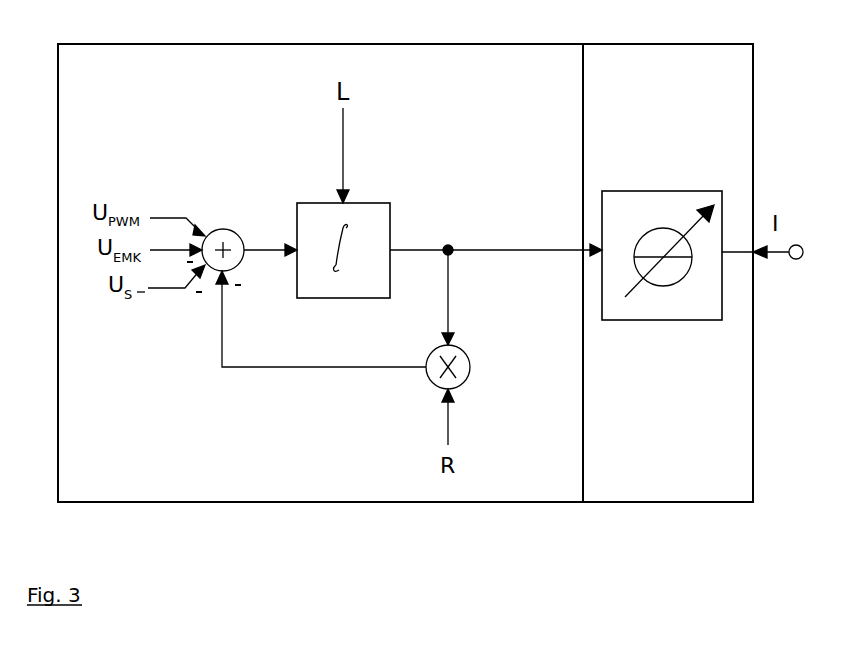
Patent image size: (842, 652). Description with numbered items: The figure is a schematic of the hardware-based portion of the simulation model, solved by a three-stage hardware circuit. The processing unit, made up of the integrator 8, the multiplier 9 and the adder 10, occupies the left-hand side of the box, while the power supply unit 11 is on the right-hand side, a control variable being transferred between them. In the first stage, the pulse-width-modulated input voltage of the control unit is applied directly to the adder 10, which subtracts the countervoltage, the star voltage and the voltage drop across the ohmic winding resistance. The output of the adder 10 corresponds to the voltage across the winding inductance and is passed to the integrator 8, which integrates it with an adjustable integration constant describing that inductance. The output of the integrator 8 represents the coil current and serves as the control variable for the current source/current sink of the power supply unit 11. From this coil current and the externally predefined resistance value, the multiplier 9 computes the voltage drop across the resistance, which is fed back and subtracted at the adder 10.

The integrator 8 is at (375, 210).
The multiplier 9 is at (470, 362).
The adder 10 is at (218, 228).
The power supply unit 11 is at (632, 192).